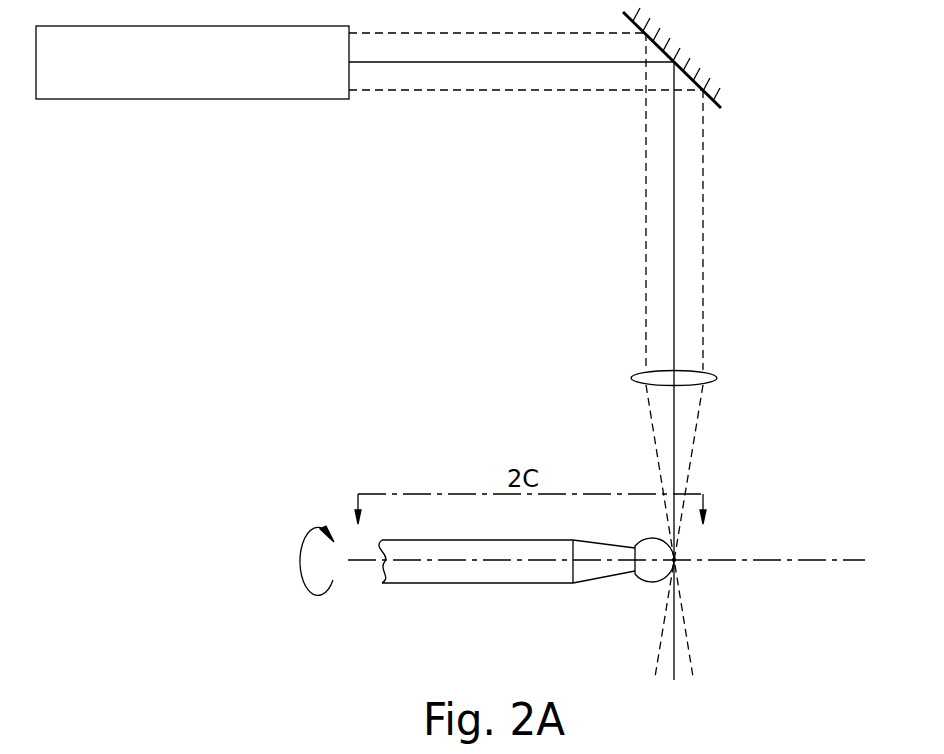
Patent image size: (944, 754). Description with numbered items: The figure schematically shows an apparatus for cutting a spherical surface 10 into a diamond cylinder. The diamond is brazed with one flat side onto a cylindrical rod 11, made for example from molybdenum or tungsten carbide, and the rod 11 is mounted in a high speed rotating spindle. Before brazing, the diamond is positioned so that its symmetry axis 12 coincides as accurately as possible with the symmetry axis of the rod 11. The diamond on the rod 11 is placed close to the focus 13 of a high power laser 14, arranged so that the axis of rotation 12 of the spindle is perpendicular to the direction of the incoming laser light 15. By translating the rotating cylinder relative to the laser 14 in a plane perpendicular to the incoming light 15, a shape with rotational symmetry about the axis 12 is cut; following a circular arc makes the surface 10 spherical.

The spherical surface 10 is at (650, 583).
The cylindrical rod 11 is at (506, 583).
The symmetry axis 12 is at (835, 562).
The focus 13 is at (676, 562).
The high power laser 14 is at (138, 99).
The incoming laser light 15 is at (675, 273).